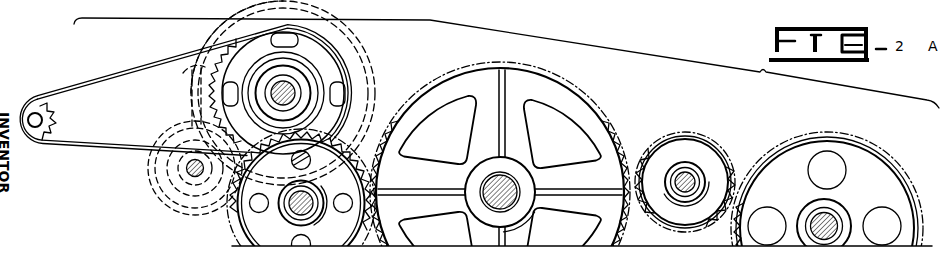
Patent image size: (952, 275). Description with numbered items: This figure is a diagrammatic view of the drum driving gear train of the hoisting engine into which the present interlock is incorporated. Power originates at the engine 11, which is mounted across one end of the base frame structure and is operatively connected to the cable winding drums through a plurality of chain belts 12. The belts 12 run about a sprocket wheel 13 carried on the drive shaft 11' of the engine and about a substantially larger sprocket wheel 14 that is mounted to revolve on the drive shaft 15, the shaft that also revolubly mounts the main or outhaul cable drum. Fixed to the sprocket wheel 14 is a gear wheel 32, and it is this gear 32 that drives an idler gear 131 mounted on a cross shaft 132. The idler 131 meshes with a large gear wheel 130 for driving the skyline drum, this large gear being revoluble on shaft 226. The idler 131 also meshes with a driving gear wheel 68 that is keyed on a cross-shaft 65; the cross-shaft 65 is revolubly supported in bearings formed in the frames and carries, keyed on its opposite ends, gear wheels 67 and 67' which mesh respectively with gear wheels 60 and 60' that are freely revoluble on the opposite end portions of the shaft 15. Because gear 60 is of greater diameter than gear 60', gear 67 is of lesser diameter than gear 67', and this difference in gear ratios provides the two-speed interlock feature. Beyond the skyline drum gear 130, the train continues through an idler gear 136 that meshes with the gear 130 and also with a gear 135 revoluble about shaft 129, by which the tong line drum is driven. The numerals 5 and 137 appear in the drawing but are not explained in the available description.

The machine frame 5 is at (312, 6).
The engine 11 is at (198, 93).
The drive shaft 11' is at (50, 144).
The chain belts 12 is at (128, 149).
The sprocket wheel 13 is at (58, 112).
The sprocket wheel 14 is at (212, 76).
The drive shaft 15 is at (293, 90).
The gear wheel 32 is at (333, 113).
The gear wheel 60 is at (237, 46).
The gear wheel 60' is at (267, 93).
The cross-shaft 65 is at (186, 177).
The gear wheel 67 is at (171, 160).
The gear wheel 67' is at (189, 156).
The driving gear wheel 68 is at (160, 197).
The shaft 129 is at (836, 214).
The gear wheel 130 is at (604, 128).
The idler gear 131 is at (373, 182).
The cross shaft 132 is at (287, 209).
The gear 135 is at (882, 166).
The idler gear 136 is at (716, 173).
The idler shaft 137 is at (689, 177).
The shaft 226 is at (516, 183).